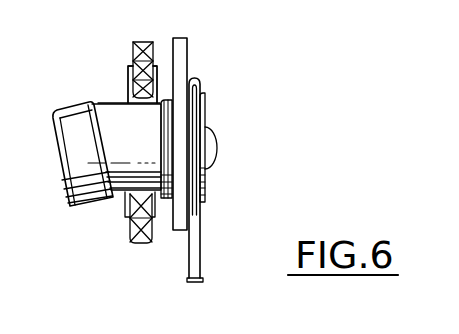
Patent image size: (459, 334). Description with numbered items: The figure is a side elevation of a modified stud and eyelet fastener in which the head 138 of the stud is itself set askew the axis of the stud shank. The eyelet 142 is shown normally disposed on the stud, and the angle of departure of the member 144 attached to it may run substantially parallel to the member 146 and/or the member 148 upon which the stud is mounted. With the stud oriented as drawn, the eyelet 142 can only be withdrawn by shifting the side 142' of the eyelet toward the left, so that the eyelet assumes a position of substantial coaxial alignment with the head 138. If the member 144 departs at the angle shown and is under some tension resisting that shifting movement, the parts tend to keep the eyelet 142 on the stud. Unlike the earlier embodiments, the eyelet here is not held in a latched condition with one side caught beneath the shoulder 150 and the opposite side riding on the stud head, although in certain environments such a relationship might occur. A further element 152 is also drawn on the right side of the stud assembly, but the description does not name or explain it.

The head 138 is at (72, 162).
The eyelet 142 is at (124, 122).
The side of the eyelet 142' is at (105, 84).
The member 144 is at (135, 50).
The member 146 is at (175, 117).
The member 148 is at (200, 232).
The shoulder 150 is at (116, 204).
The dome 152 is at (215, 156).